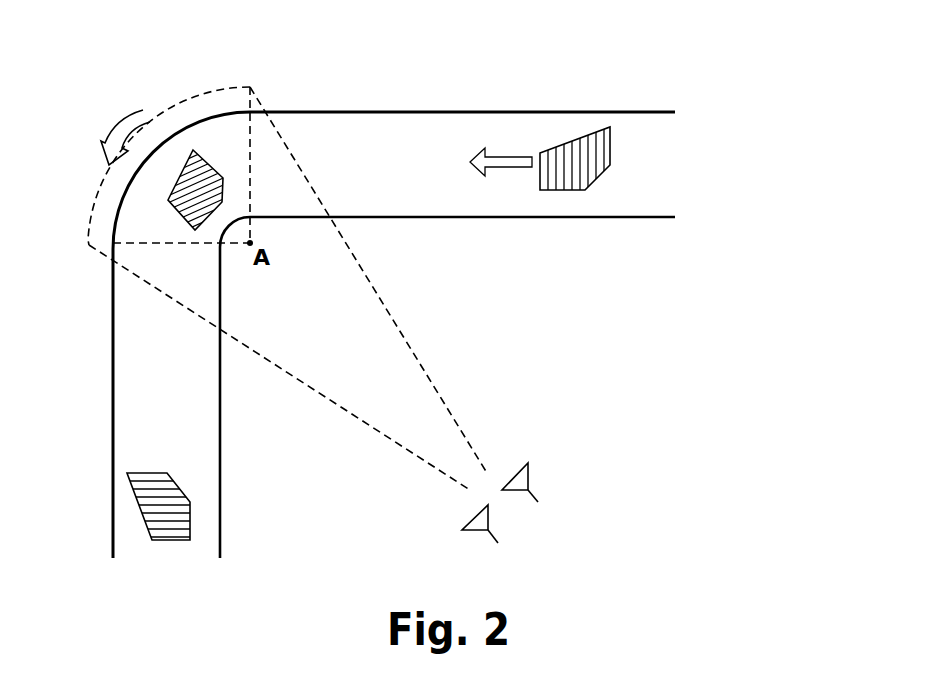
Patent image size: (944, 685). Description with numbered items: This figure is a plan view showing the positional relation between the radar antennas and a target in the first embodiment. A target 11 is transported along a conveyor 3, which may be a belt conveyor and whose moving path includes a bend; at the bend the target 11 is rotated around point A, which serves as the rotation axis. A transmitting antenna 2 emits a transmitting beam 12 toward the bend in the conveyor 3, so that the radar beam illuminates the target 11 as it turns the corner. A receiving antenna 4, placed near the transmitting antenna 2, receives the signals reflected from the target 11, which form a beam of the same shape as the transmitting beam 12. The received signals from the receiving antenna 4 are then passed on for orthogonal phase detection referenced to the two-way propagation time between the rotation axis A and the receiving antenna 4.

The transmitting antenna 2 is at (528, 473).
The conveyor 3 is at (220, 518).
The receiving antenna 4 is at (462, 533).
The target 11 is at (565, 142).
The transmitting beam 12 is at (403, 338).